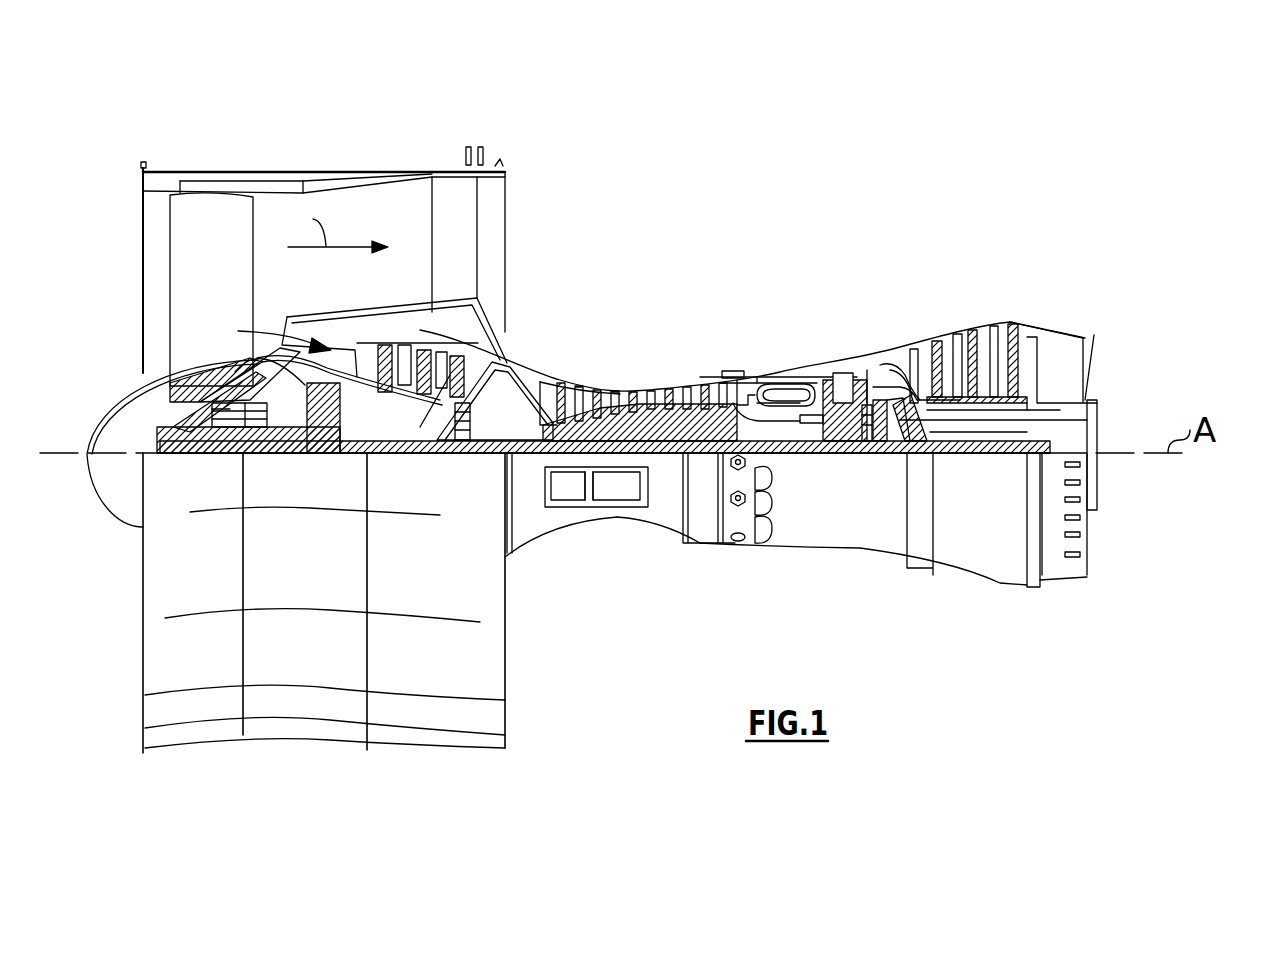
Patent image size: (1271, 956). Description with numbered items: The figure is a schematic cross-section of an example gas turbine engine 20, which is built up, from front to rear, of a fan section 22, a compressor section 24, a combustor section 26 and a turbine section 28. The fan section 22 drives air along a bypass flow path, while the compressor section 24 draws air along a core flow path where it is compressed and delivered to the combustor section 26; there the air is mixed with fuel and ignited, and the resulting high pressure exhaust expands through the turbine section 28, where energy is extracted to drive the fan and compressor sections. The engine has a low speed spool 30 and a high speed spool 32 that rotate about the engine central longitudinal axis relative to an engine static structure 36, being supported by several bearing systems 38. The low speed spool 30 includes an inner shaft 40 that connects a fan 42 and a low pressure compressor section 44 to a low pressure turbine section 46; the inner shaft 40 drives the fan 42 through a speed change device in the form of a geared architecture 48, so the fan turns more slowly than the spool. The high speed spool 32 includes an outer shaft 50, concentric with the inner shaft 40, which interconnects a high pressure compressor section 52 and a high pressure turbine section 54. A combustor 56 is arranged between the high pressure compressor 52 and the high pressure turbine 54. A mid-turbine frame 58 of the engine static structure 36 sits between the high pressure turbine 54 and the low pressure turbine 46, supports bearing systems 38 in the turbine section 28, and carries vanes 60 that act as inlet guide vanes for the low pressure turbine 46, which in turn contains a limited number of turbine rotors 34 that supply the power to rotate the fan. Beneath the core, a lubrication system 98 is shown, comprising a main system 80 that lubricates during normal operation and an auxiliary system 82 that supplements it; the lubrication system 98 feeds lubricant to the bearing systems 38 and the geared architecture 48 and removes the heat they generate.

The gas turbine engine 20 is at (789, 215).
The fan section 22 is at (350, 152).
The compressor section 24 is at (765, 295).
The combustor section 26 is at (865, 295).
The turbine section 28 is at (1035, 295).
The low speed spool 30 is at (665, 466).
The high speed spool 32 is at (704, 380).
The turbine rotors 34 is at (985, 452).
The engine static structure 36 is at (705, 555).
The bearing systems 38 is at (226, 458).
The inner shaft 40 is at (522, 458).
The fan 42 is at (228, 299).
The low pressure compressor section 44 is at (455, 322).
The low pressure turbine section 46 is at (975, 333).
The geared architecture 48 is at (340, 458).
The outer shaft 50 is at (786, 452).
The high pressure compressor section 52 is at (634, 400).
The high pressure turbine section 54 is at (845, 375).
The combustor 56 is at (778, 398).
The mid-turbine frame 58 is at (890, 362).
The vanes 60 is at (928, 455).
The main system 80 is at (568, 492).
The auxiliary system 82 is at (628, 493).
The lubrication system 98 is at (600, 480).